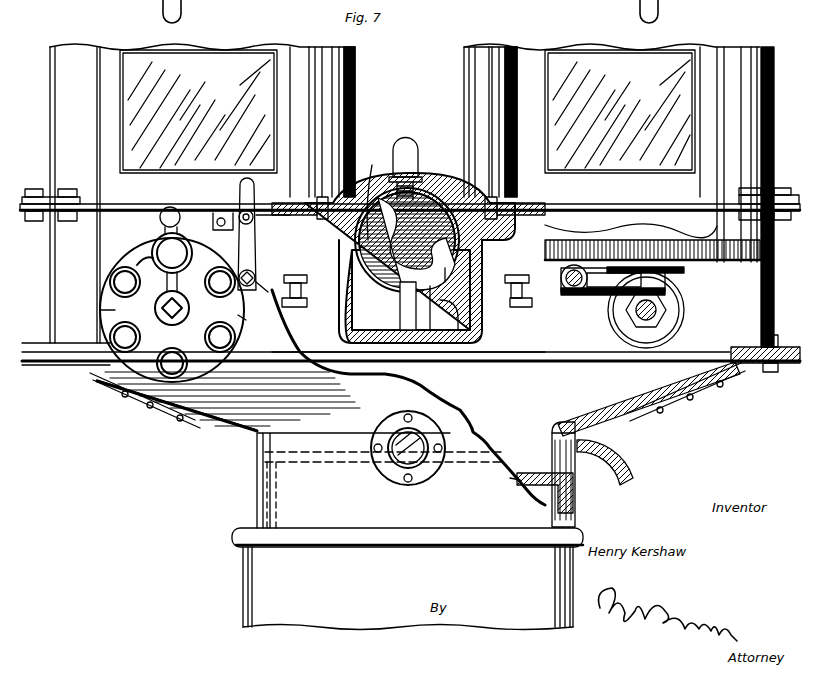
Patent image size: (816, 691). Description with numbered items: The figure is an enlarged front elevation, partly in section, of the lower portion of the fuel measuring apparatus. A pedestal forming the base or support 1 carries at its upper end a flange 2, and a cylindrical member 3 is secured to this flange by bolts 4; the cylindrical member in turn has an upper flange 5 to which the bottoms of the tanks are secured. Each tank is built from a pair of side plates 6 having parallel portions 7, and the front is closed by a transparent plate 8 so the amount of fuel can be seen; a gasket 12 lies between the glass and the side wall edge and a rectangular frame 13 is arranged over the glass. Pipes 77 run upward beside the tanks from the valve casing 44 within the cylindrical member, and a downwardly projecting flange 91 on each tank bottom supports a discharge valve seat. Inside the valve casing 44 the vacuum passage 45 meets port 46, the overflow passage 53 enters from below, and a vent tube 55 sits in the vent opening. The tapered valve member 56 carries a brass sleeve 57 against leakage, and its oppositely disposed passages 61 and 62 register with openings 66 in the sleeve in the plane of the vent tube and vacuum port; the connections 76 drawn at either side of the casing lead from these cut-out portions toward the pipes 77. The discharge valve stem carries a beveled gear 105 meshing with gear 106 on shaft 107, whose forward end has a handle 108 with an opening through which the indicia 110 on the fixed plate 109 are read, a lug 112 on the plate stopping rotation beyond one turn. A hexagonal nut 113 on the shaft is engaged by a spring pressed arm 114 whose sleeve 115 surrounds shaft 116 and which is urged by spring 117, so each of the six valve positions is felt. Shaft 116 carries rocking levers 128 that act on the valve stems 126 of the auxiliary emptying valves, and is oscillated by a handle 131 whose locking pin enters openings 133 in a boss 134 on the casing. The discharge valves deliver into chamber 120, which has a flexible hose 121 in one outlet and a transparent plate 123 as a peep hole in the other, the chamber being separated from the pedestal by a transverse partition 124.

The base or support 1 is at (243, 580).
The flange 2 is at (725, 378).
The cylindrical member 3 is at (50, 290).
The bolts 4 is at (772, 336).
The flange 5 is at (22, 202).
The side plates 6 is at (46, 75).
The parallel portions 7 is at (50, 108).
The plates 8 is at (407, 111).
The gasket 12 is at (199, 226).
The rectangular frame 13 is at (291, 60).
The valve casing 44 is at (348, 205).
The passage 45 is at (462, 328).
The port 46 is at (411, 332).
The passage 53 is at (356, 352).
The vent tube 55 is at (405, 145).
The tapered valve member 56 is at (425, 200).
The sleeve 57 is at (470, 300).
The passage 61 is at (392, 196).
The passage 62 is at (454, 330).
The openings 66 is at (420, 156).
The shelf bracket 76 is at (310, 236).
The pipes 77 is at (325, 80).
The flange 91 is at (648, 240).
The beveled gear 105 is at (686, 270).
The gear 106 is at (680, 326).
The shaft 107 is at (664, 316).
The handle 108 is at (170, 207).
The plate 109 is at (248, 318).
The indicia 110 is at (100, 310).
The lug or projection 112 is at (142, 250).
The hexagonal nut 113 is at (658, 306).
The arm 114 is at (602, 300).
The sleeve 115 is at (572, 300).
The shaft 116 is at (564, 294).
The spring 117 is at (666, 284).
The chamber 120 is at (503, 450).
The flexible hose 121 is at (618, 462).
The transparent plate 123 is at (388, 448).
The transverse wall or partition 124 is at (520, 488).
The valve stems 126 is at (524, 308).
The rocking levers 128 is at (320, 306).
The handle 131 is at (256, 200).
The openings 133 is at (222, 216).
The boss 134 is at (243, 185).